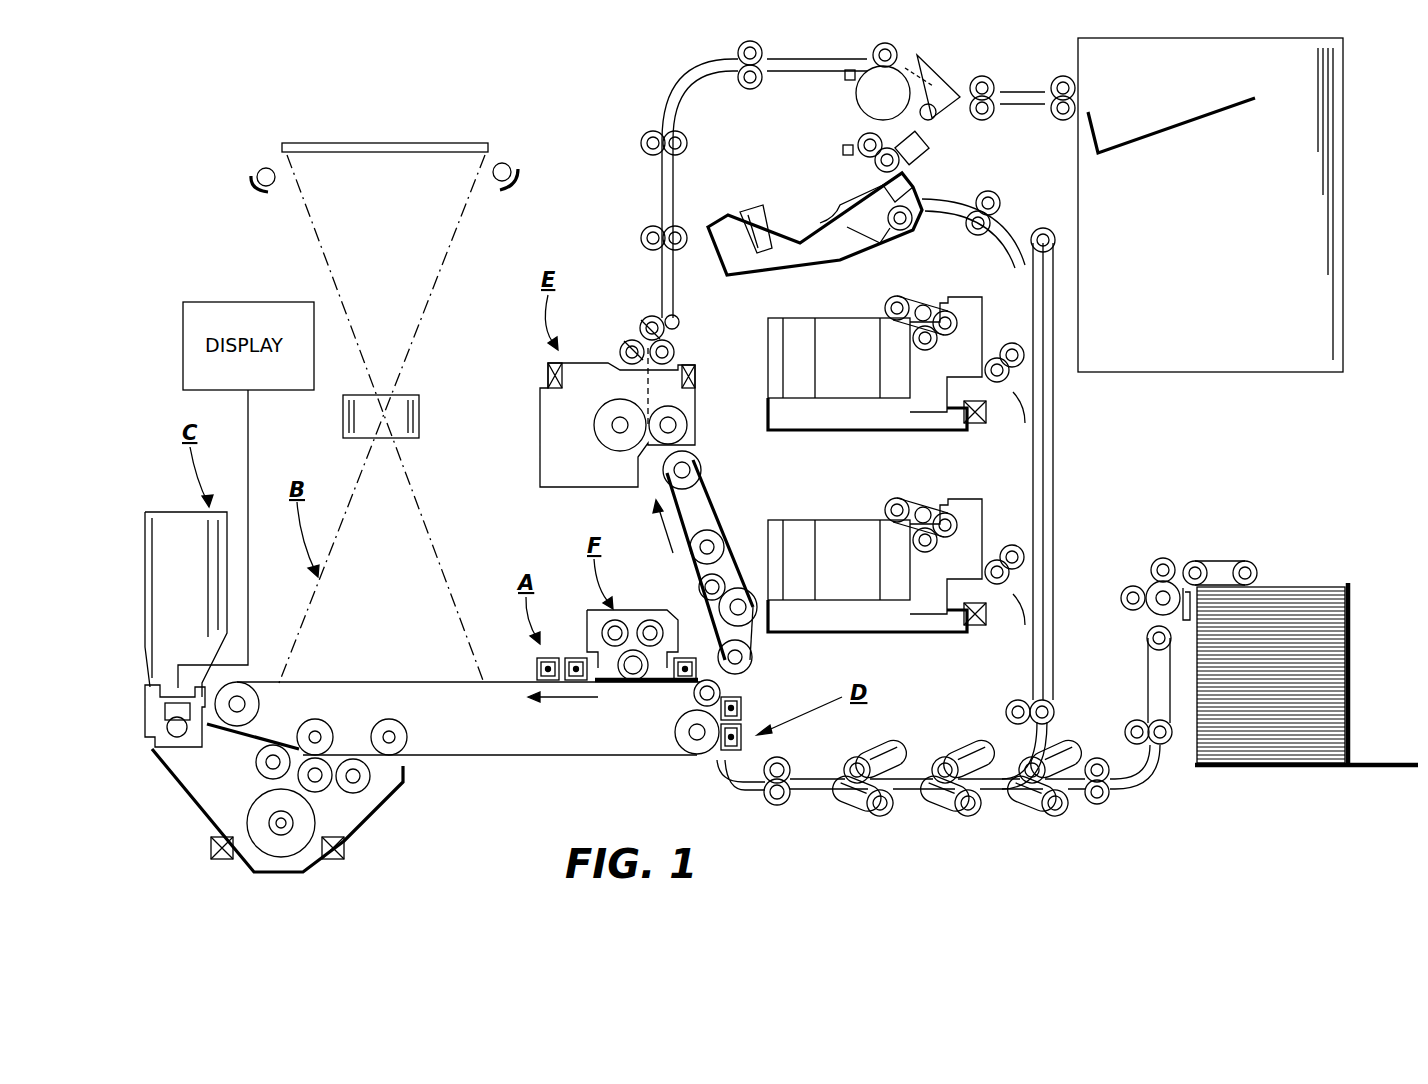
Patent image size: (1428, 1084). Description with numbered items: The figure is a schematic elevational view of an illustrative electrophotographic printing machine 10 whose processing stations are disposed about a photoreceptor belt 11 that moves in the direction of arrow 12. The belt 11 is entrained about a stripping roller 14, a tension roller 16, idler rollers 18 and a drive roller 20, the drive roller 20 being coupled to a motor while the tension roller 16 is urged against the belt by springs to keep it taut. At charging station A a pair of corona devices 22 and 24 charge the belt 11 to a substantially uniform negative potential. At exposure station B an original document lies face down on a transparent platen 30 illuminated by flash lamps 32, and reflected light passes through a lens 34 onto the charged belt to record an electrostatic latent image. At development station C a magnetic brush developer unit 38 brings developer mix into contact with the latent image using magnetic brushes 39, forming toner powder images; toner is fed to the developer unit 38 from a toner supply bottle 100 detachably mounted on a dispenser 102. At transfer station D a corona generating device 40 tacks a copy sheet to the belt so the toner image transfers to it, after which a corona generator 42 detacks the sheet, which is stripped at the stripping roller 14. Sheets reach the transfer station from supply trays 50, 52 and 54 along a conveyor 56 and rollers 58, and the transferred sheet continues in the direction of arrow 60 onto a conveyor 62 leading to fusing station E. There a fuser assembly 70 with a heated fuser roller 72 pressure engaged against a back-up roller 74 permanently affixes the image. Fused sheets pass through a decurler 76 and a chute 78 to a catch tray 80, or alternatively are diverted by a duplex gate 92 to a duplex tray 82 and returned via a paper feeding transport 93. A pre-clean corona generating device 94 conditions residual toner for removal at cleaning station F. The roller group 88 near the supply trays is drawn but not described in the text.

The electrophotographic printing machine 10 is at (560, 198).
The photoreceptor belt 11 is at (607, 757).
The arrow 12 is at (573, 702).
The stripping roller 14 is at (693, 696).
The tension roller 16 is at (262, 705).
The idler rollers 18 is at (386, 720).
The drive roller 20 is at (690, 745).
The corona device 22 is at (537, 665).
The corona device 24 is at (573, 660).
The transparent platen 30 is at (418, 152).
The flash lamps 32 is at (258, 192).
The lens 34 is at (415, 415).
The magnetic brush developer unit 38 is at (236, 761).
The magnetic brushes 39 is at (258, 772).
The corona generating device 40 is at (742, 740).
The corona generator 42 is at (742, 700).
The supply tray 50 is at (852, 430).
The supply tray 52 is at (923, 593).
The supply tray 54 is at (1325, 768).
The conveyor 56 is at (1148, 672).
The rollers 58 is at (968, 815).
The arrow 60 is at (673, 538).
The conveyor 62 is at (727, 538).
The fuser assembly 70 is at (593, 455).
The heated fuser roller 72 is at (600, 425).
The back-up roller 74 is at (685, 425).
The decurler 76 is at (636, 336).
The chute 78 is at (690, 95).
The catch tray 80 is at (1175, 128).
The duplex tray 82 is at (800, 243).
The roller 88 is at (1228, 562).
The duplex gate 92 is at (925, 85).
The paper feeding transport 93 is at (1060, 450).
The pre-clean corona generating device 94 is at (697, 655).
The toner supply bottle 100 is at (196, 512).
The dispenser 102 is at (163, 683).